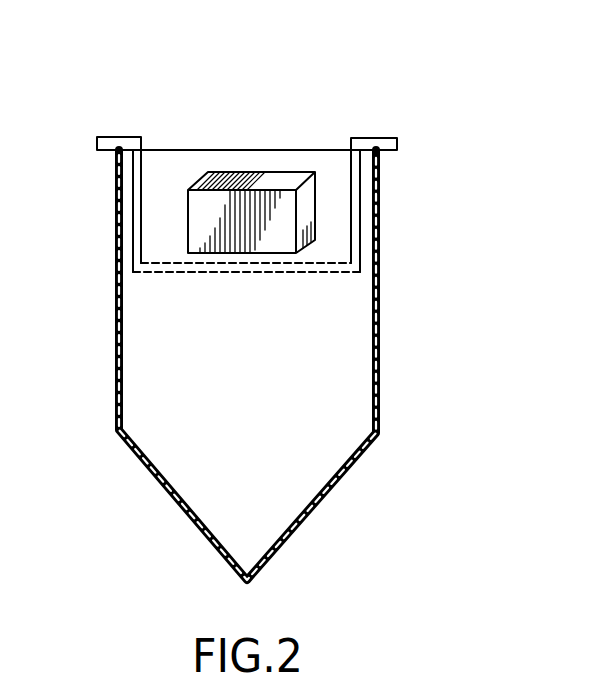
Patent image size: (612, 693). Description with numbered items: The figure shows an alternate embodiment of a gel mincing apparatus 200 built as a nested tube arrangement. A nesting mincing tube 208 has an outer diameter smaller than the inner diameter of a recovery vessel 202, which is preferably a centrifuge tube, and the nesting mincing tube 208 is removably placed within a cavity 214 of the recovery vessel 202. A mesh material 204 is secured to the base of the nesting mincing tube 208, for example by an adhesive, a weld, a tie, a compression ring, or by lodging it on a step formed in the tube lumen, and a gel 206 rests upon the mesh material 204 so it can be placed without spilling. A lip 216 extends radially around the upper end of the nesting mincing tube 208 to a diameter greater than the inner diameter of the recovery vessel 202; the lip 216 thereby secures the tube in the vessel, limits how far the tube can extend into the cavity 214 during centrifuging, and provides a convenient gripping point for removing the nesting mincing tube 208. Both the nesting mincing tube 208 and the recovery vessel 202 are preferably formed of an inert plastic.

The gel mincing apparatus 200 is at (307, 294).
The recovery vessel 202 is at (312, 314).
The mesh material 204 is at (265, 284).
The gel 206 is at (278, 173).
The nesting mincing tube 208 is at (201, 267).
The cavity 214 is at (270, 406).
The lip 216 is at (377, 138).